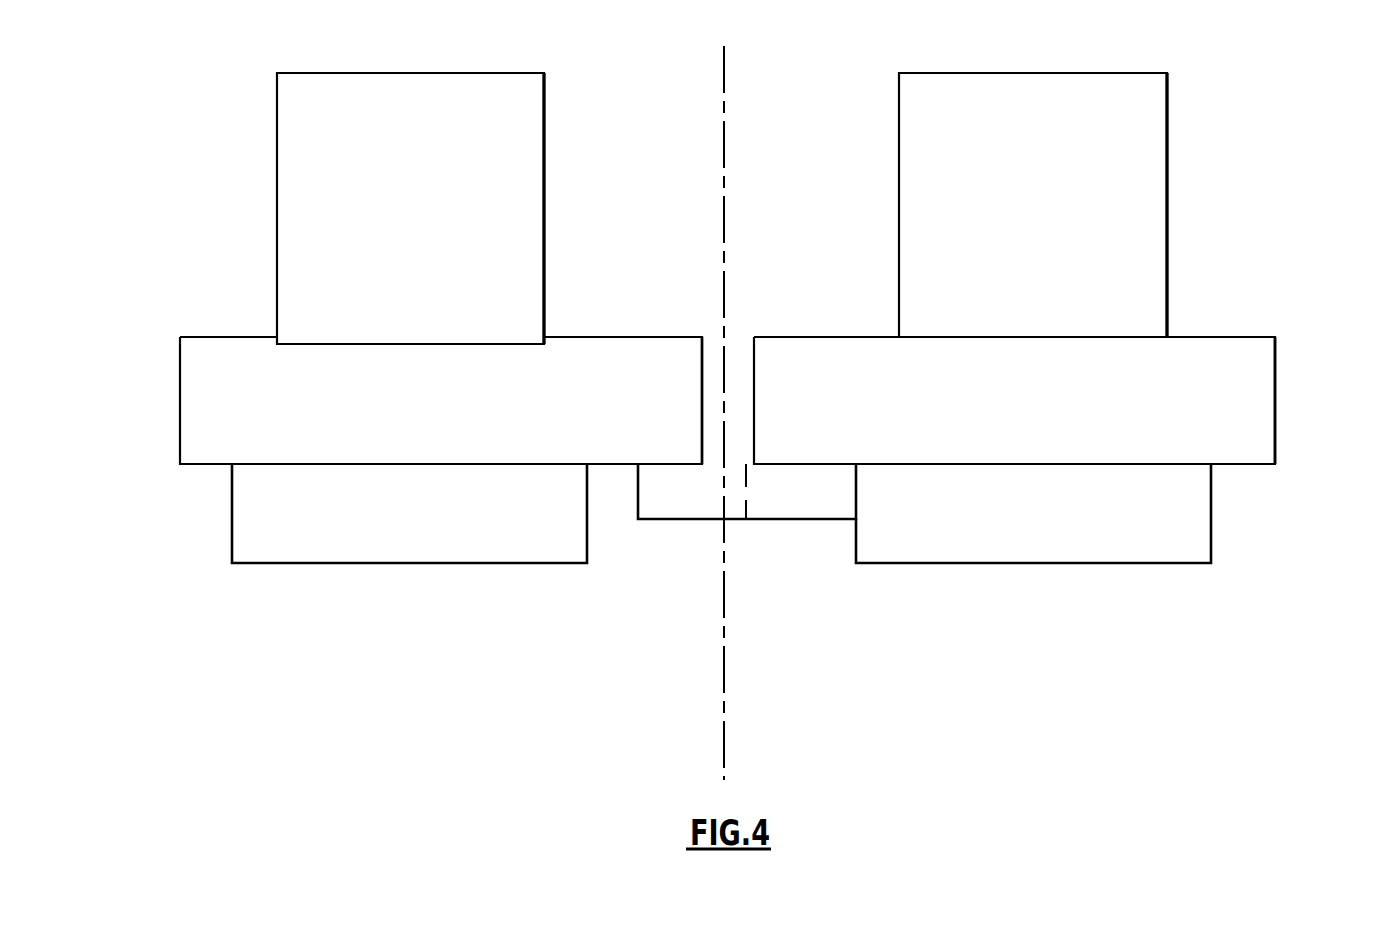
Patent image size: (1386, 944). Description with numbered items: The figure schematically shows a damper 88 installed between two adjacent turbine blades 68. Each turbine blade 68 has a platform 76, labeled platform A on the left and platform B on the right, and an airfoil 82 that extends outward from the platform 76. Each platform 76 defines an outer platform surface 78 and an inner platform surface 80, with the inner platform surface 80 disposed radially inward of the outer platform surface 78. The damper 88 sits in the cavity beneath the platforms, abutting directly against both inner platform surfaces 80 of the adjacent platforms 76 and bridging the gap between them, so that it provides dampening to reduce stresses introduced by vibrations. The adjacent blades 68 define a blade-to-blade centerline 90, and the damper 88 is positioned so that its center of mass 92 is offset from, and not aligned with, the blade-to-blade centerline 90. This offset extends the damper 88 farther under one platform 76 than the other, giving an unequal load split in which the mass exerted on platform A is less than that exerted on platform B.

The turbine blade 68 is at (249, 99).
The platform 76 is at (197, 403).
The outer platform surface 78 is at (200, 337).
The inner platform surface 80 is at (200, 467).
The airfoil 82 is at (527, 185).
The damper 88 is at (667, 532).
The blade-to-blade centerline 90 is at (725, 90).
The damper center of mass 92 is at (747, 503).